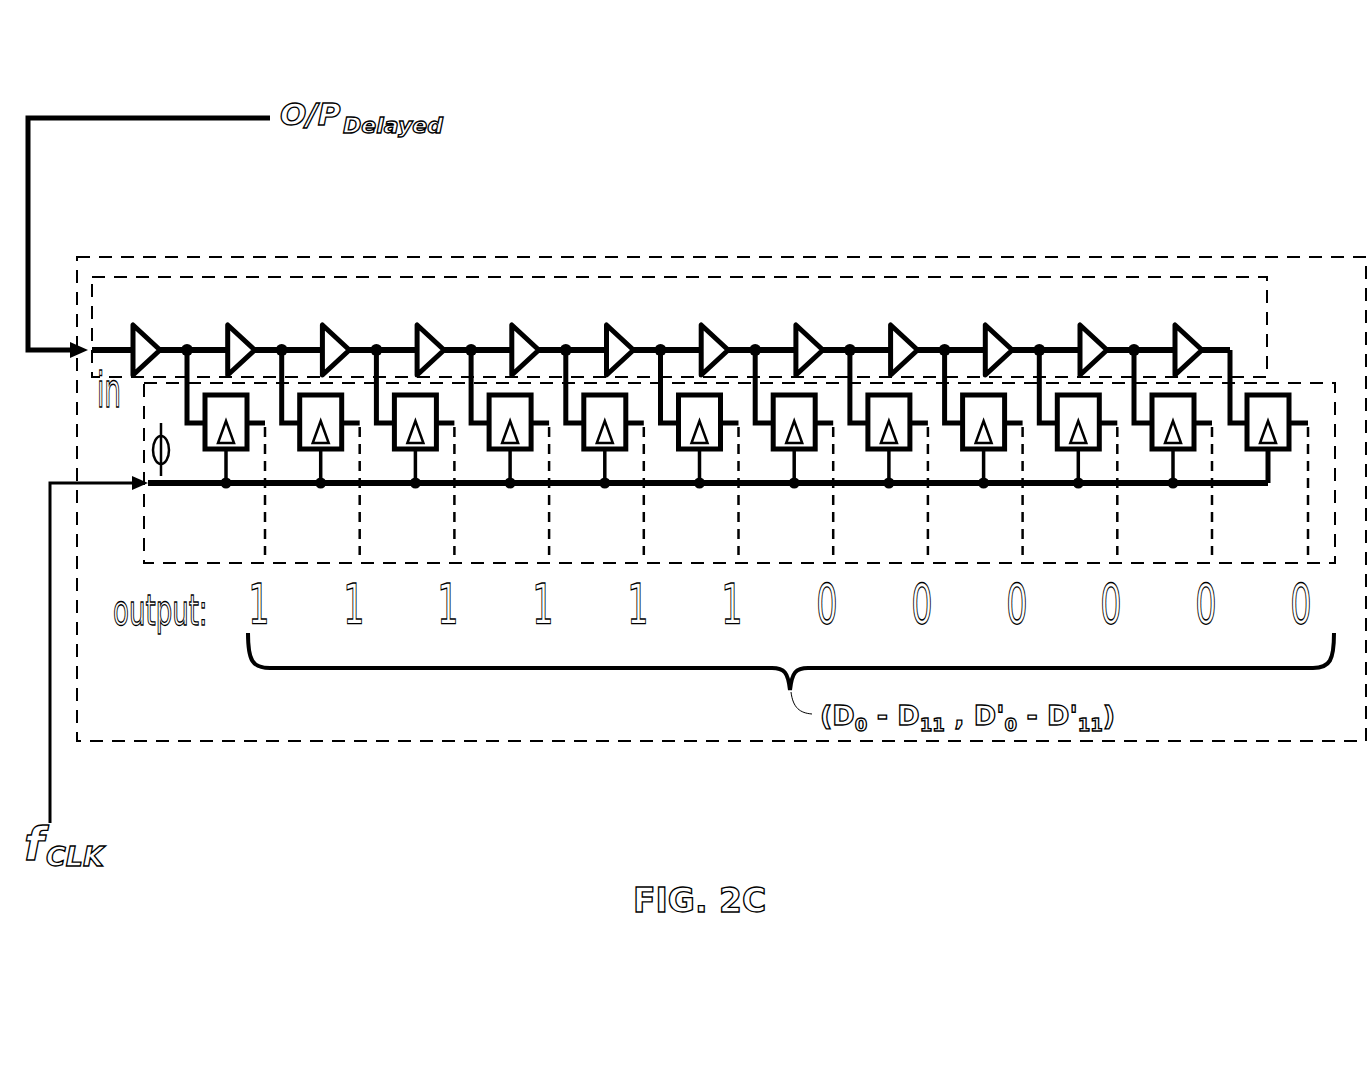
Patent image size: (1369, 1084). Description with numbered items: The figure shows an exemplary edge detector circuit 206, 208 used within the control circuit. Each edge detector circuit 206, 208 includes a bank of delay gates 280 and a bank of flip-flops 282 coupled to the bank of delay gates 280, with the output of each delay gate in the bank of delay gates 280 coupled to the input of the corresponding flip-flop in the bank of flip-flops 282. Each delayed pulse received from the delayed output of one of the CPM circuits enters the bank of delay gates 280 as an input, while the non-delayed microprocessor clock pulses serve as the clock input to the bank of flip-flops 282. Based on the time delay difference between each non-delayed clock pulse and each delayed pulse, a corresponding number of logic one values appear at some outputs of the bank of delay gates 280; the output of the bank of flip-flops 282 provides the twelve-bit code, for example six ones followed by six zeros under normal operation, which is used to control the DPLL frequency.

The edge detector circuit 206 is at (674, 259).
The edge detector circuit 208 is at (277, 246).
The bank of delay gates 280 is at (1268, 305).
The bank of flip-flops 282 is at (1288, 383).